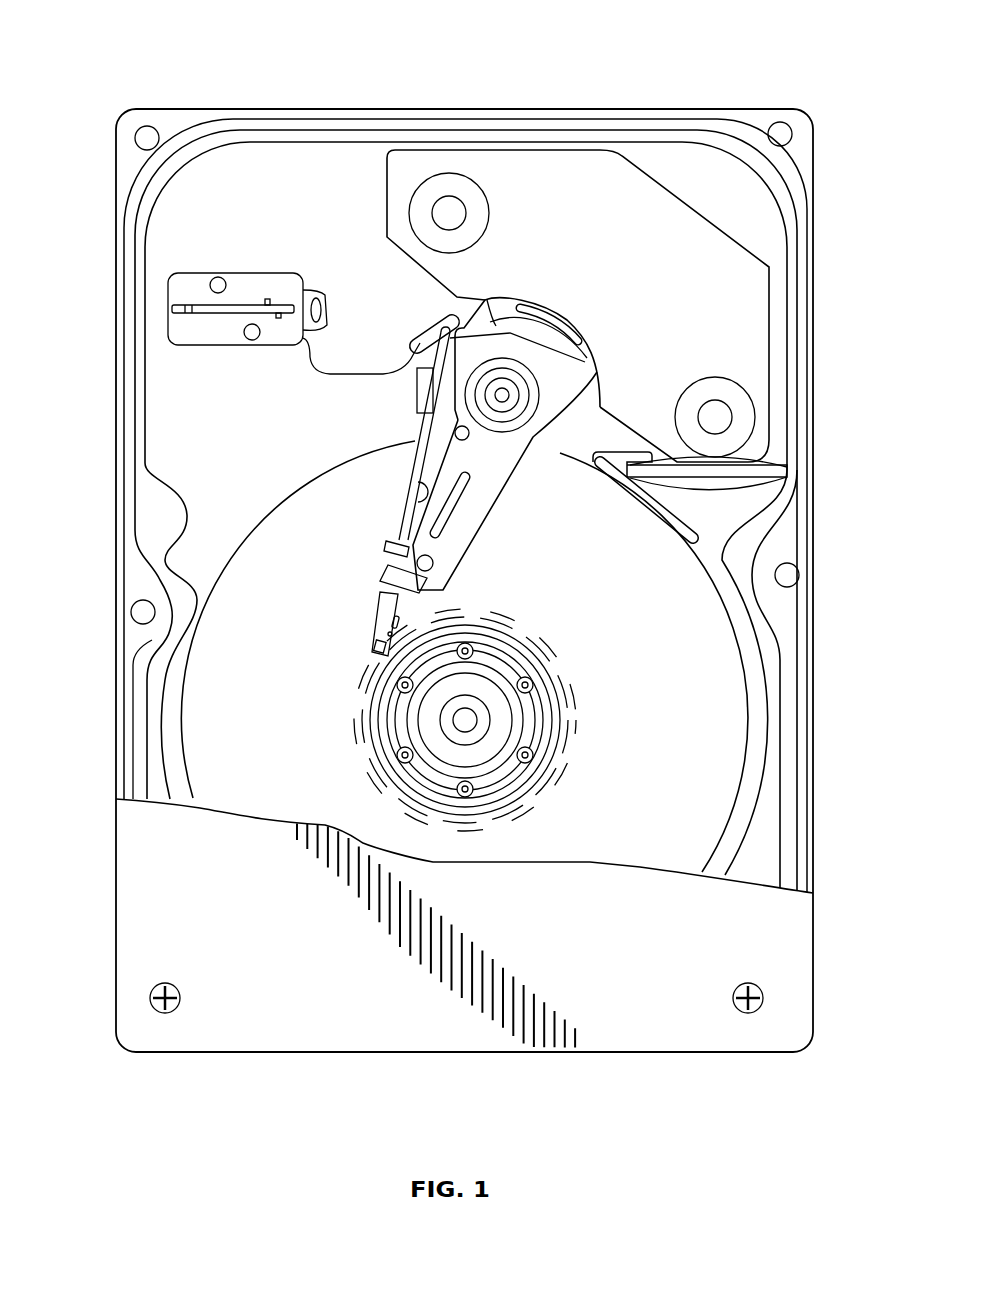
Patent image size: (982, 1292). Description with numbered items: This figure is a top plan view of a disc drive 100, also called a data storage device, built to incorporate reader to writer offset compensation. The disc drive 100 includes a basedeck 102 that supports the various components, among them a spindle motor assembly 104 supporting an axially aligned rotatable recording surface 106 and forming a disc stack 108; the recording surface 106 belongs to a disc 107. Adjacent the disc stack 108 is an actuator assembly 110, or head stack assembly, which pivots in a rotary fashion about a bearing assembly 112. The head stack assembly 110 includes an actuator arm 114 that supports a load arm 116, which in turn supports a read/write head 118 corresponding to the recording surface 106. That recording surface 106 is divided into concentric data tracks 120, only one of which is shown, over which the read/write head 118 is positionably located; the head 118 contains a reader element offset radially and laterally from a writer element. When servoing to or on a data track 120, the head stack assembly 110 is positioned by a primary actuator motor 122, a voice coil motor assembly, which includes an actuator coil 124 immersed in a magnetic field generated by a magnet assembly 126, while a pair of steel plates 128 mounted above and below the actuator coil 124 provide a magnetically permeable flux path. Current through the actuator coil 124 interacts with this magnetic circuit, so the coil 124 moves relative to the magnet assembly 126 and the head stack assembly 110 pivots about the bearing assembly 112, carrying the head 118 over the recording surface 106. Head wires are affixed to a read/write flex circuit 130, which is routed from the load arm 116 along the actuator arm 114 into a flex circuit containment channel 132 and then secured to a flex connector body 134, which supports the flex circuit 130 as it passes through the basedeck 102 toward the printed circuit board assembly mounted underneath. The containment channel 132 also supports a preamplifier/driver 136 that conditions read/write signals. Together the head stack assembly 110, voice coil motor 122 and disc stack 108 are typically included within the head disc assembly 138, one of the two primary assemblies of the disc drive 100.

The disc drive 100 is at (375, 75).
The basedeck 102 is at (307, 183).
The spindle motor assembly 104 is at (518, 677).
The rotatable recording surface 106 is at (650, 605).
The disc 107 is at (746, 707).
The disc stack 108 is at (758, 739).
The actuator assembly 110 is at (508, 510).
The bearing assembly 112 is at (550, 381).
The actuator arm 114 is at (437, 548).
The load arm 116 is at (382, 612).
The read/write head 118 is at (365, 652).
The concentric data tracks 120 is at (553, 782).
The primary actuator motor 122 is at (764, 255).
The actuator coil 124 is at (508, 312).
The magnet assembly 126 is at (528, 160).
The steel plates 128 is at (745, 345).
The read/write flex circuit 130 is at (313, 367).
The flex circuit containment channel 132 is at (412, 482).
The flex connector body 134 is at (182, 333).
The preamplifier/driver 136 is at (415, 393).
The head disc assembly 138 is at (276, 1062).